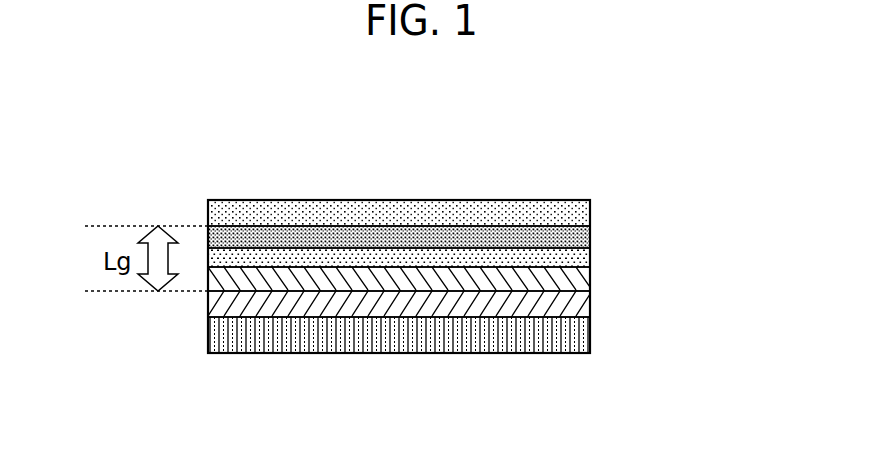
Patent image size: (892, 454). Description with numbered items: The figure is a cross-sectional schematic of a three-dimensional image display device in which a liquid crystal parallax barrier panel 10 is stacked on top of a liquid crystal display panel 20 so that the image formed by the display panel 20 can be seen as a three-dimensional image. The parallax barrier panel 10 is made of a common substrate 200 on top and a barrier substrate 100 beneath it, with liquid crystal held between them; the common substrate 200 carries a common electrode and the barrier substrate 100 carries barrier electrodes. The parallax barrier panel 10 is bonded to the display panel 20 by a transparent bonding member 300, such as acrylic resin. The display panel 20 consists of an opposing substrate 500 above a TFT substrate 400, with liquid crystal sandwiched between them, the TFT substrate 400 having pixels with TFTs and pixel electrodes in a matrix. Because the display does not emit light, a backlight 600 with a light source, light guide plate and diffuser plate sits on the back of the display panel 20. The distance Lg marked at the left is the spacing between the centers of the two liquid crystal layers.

The liquid crystal parallax barrier panel 10 is at (476, 198).
The liquid crystal display panel 20 is at (482, 306).
The barrier substrate 100 is at (583, 238).
The common substrate 200 is at (573, 212).
The bonding member 300 is at (578, 258).
The TFT substrate 400 is at (580, 306).
The opposing substrate 500 is at (578, 282).
The backlight 600 is at (580, 338).